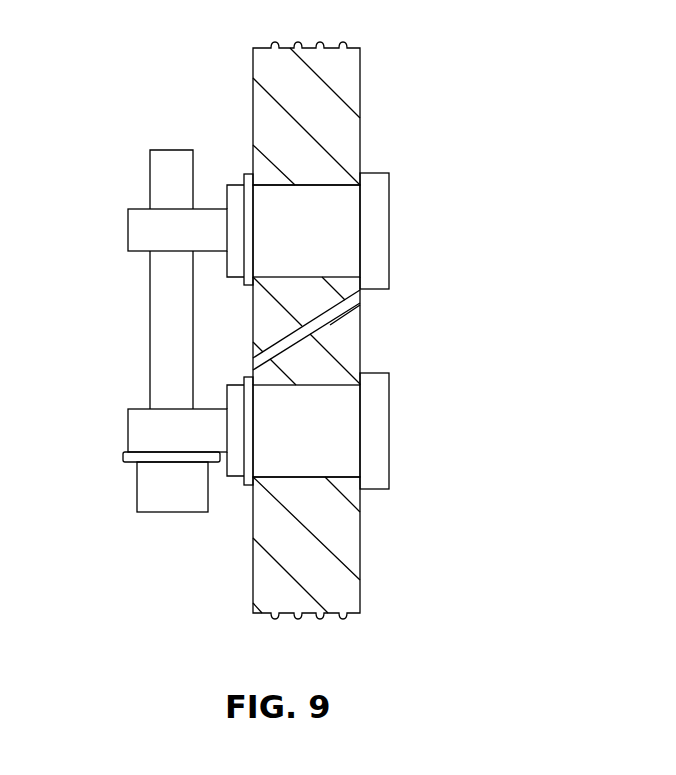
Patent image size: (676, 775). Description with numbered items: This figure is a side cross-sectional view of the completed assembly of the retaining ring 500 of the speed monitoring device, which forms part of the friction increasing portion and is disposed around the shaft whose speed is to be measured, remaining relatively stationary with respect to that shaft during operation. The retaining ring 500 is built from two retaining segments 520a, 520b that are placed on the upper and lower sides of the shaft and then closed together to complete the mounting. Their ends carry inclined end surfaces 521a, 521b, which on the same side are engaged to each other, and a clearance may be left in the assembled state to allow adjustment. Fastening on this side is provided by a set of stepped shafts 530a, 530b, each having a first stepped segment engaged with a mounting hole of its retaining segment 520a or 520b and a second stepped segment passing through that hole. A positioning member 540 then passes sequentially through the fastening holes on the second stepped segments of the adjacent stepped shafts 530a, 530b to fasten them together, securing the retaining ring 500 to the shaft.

The retaining ring 500 is at (399, 98).
The retaining segment 520a is at (310, 100).
The retaining segment 520b is at (303, 553).
The inclined end surface 521a is at (302, 327).
The inclined end surface 521b is at (330, 322).
The stepped shaft 530a is at (325, 235).
The stepped shaft 530b is at (320, 428).
The positioning member 540 is at (175, 495).